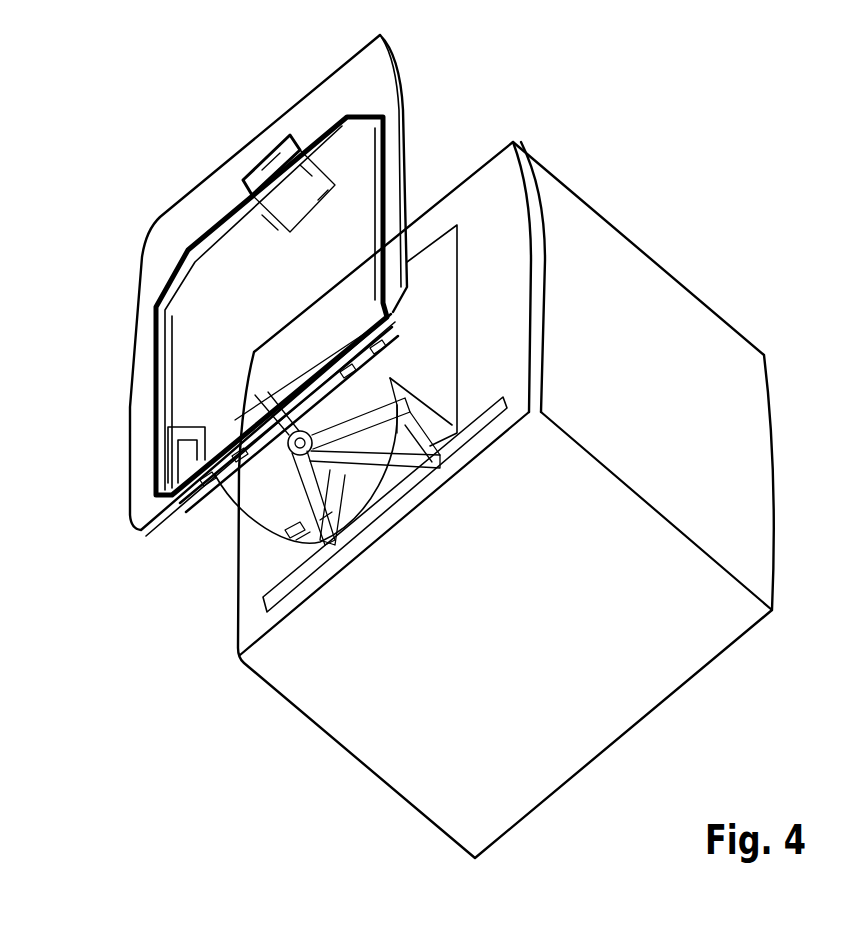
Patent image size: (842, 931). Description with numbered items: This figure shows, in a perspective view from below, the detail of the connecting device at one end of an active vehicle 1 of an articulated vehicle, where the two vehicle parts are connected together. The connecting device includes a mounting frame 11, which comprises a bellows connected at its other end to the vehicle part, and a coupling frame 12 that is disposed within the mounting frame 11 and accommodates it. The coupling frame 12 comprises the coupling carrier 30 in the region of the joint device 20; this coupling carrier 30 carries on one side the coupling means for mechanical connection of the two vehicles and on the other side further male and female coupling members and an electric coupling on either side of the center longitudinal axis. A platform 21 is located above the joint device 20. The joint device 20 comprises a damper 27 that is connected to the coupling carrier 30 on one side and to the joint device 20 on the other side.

The active vehicle 1 is at (668, 296).
The mounting frame 11 is at (377, 82).
The coupling frame 12 is at (383, 143).
The joint device 20 is at (298, 520).
The platform 21 is at (378, 392).
The damper 27 is at (350, 372).
The coupling carrier 30 is at (178, 492).